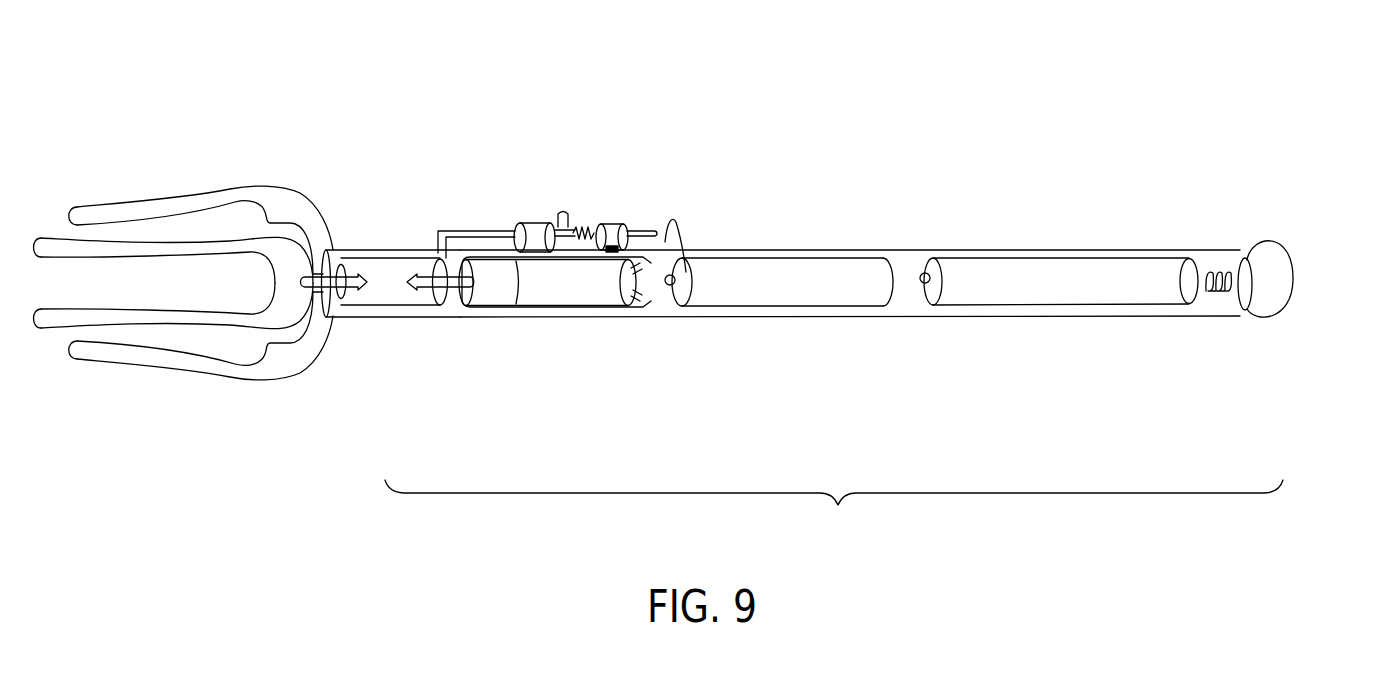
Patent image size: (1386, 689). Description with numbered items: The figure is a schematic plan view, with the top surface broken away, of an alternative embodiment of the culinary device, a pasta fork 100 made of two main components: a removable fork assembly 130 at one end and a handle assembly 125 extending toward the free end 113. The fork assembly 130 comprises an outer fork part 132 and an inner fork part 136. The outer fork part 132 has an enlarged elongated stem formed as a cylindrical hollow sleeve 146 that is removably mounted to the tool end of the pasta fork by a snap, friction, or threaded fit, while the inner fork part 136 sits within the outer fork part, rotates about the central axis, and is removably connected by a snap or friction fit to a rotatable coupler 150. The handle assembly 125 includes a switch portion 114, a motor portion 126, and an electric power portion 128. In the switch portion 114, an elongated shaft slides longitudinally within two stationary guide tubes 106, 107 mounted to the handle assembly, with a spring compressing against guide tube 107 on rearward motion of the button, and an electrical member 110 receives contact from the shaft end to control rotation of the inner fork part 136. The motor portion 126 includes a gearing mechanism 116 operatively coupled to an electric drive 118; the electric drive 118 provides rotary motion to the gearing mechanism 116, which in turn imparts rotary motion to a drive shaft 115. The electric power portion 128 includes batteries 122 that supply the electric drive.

The pasta fork 100 is at (843, 117).
The fork assembly 130 is at (288, 193).
The outer fork part 132 is at (138, 207).
The inner fork part 136 is at (49, 245).
The hollow sleeve 146 is at (399, 250).
The rotatable coupler 150 is at (381, 265).
The drive shaft 115 is at (440, 304).
The switch portion 114 is at (498, 231).
The guide tube 106 is at (545, 224).
The guide tube 107 is at (608, 224).
The electrical member 110 is at (680, 228).
The gearing mechanism 116 is at (492, 304).
The electric drive 118 is at (600, 304).
The motor portion 126 is at (553, 312).
The electric power portion 128 is at (980, 249).
The batteries 122 is at (858, 302).
The free end 113 is at (1293, 262).
The handle assembly 125 is at (834, 515).